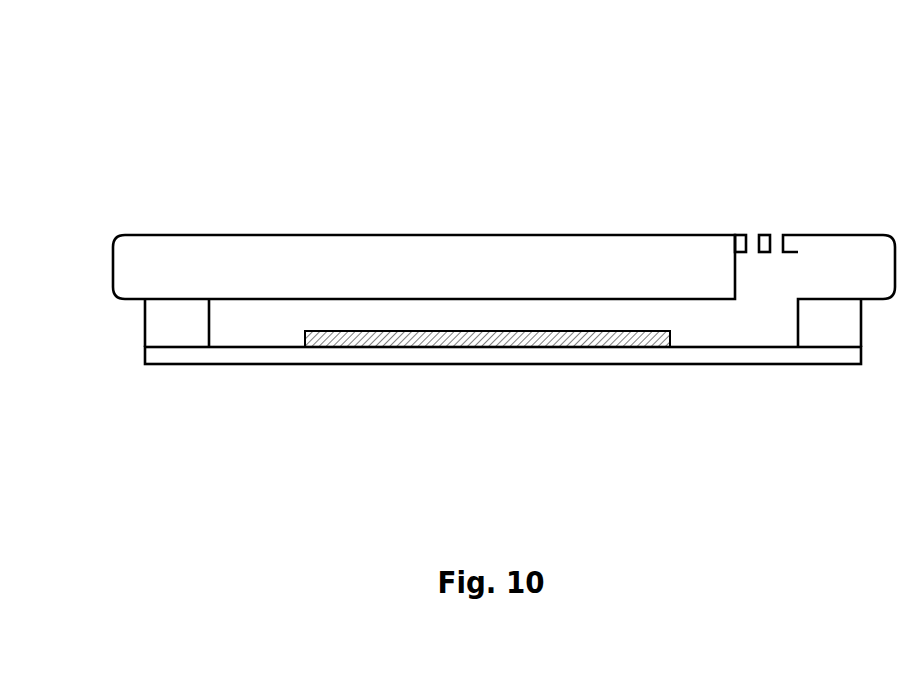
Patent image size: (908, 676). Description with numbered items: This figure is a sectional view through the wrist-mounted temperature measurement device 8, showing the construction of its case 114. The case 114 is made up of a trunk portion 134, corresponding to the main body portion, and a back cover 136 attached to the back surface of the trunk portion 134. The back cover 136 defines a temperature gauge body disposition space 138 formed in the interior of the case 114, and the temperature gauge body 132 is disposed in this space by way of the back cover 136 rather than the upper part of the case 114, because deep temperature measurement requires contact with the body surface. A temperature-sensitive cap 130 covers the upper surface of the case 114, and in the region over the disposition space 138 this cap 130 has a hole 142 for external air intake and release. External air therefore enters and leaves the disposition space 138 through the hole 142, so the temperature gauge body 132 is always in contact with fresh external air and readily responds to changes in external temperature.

The wrist-mounted temperature measurement device 8 is at (613, 142).
The case 114 is at (420, 252).
The hole 142 is at (757, 236).
The temperature-sensitive cap 130 is at (785, 236).
The trunk portion 134 is at (158, 324).
The back cover 136 is at (342, 352).
The temperature gauge body 132 is at (498, 340).
The temperature gauge body disposition space 138 is at (706, 325).